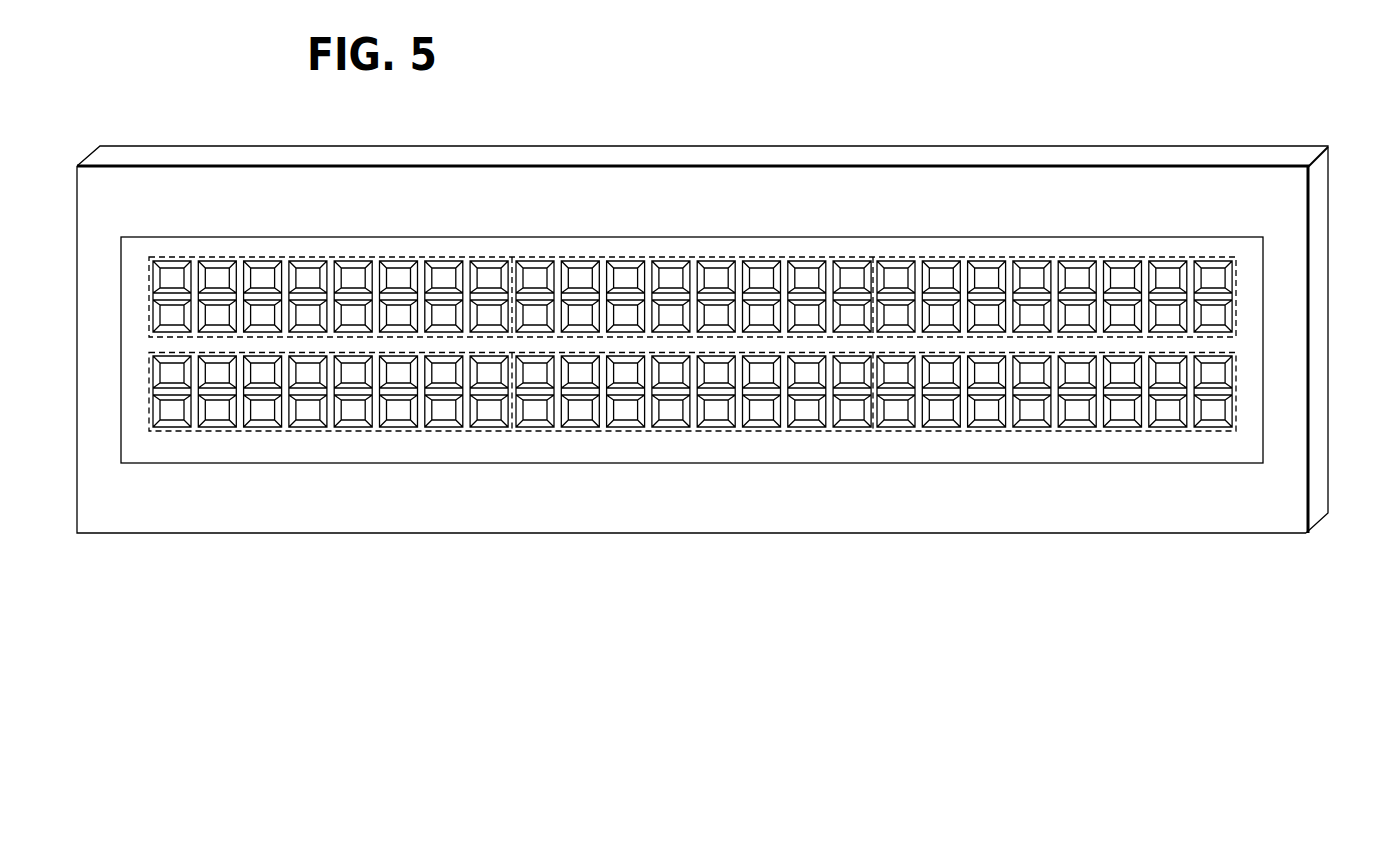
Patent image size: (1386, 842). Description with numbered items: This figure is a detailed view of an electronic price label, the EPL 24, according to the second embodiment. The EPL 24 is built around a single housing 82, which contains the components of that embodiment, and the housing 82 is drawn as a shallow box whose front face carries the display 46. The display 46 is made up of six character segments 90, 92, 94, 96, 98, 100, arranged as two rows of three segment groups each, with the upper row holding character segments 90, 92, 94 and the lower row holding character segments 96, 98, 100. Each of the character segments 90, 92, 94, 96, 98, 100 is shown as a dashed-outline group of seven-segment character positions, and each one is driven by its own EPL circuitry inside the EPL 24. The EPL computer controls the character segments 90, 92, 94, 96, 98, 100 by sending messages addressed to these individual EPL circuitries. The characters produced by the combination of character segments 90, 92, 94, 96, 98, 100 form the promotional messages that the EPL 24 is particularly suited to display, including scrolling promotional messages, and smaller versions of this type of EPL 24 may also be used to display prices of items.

The EPL 24 is at (1266, 304).
The display 46 is at (1146, 237).
The housing 82 is at (1282, 211).
The character segment 90 is at (340, 260).
The character segment 92 is at (698, 260).
The character segment 94 is at (1018, 258).
The character segment 96 is at (330, 433).
The character segment 98 is at (693, 432).
The character segment 100 is at (1055, 432).